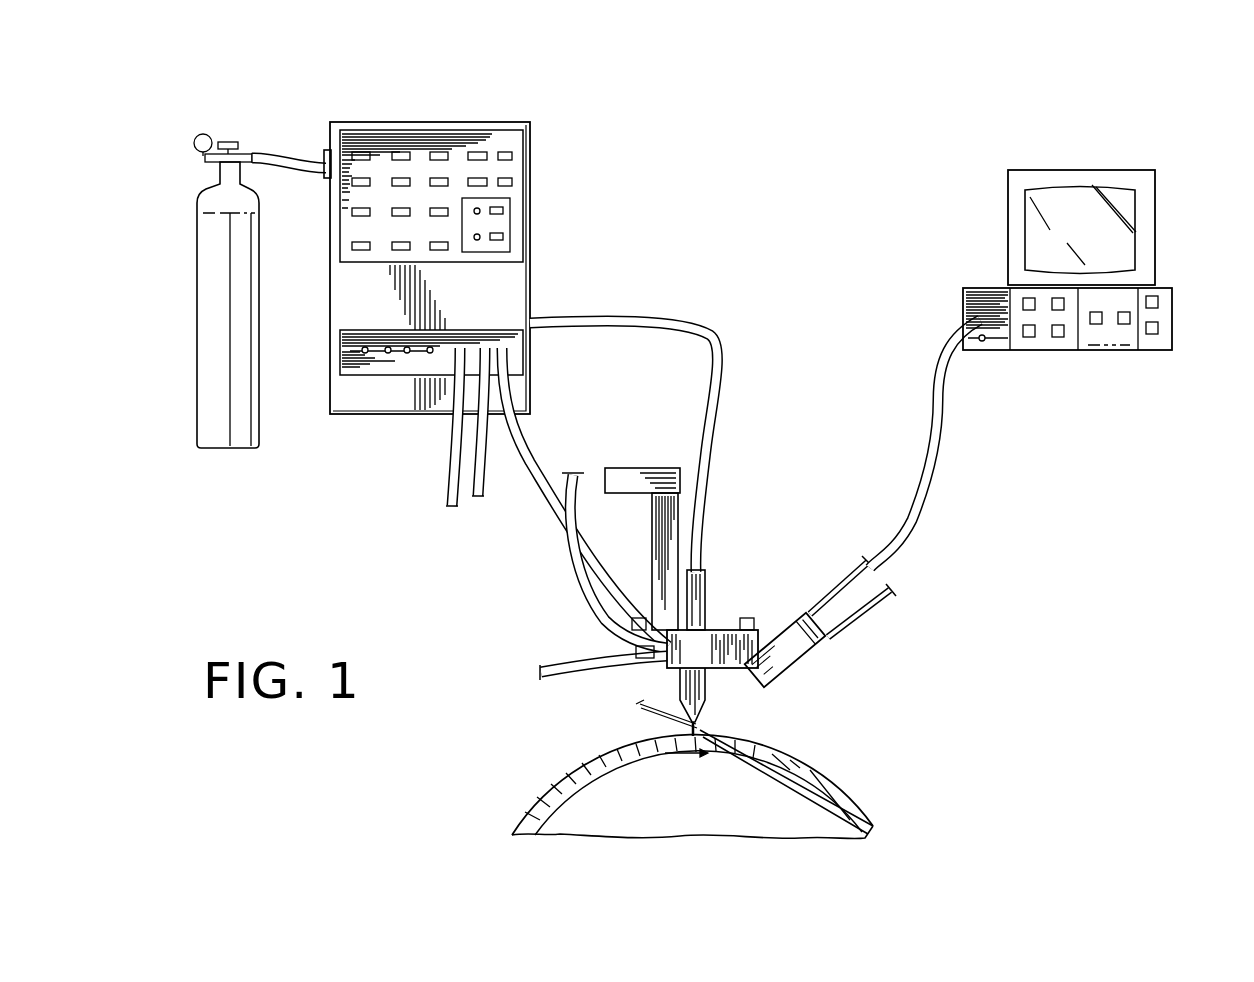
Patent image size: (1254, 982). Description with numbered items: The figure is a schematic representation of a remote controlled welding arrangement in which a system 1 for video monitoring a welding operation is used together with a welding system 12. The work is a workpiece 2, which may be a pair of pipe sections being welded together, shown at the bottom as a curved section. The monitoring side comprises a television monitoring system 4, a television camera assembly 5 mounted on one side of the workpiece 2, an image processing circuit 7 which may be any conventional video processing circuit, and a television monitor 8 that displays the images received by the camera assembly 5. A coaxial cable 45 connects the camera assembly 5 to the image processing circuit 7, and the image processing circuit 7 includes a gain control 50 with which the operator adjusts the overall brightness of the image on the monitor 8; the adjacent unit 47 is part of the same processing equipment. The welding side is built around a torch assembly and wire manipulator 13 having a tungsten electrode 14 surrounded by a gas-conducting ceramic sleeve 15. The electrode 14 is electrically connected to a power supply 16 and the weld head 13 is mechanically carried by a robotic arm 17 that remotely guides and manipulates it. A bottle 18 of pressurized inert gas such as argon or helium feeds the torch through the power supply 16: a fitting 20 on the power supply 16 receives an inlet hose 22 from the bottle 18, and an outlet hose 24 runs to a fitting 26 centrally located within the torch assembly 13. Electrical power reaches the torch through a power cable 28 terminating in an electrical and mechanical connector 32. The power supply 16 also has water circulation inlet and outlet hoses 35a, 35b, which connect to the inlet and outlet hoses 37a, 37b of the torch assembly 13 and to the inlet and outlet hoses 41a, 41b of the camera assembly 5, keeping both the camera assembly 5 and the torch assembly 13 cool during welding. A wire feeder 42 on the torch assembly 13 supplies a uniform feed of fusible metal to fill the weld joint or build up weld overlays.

The system for video monitoring a welding operation 1 is at (1126, 168).
The workpiece 2 is at (556, 782).
The television monitoring system 4 is at (1186, 256).
The television camera assembly 5 is at (826, 642).
The image processing circuit 7 is at (1176, 311).
The television monitor 8 is at (1080, 229).
The welding system 12 is at (300, 108).
The torch assembly and wire manipulator 13 is at (710, 628).
The tungsten electrode 14 is at (702, 718).
The gas-conducting ceramic sleeve 15 is at (704, 676).
The power supply 16 is at (534, 265).
The robotic arm 17 is at (622, 470).
The bottle of pressurized inert gas 18 is at (196, 328).
The fitting 20 is at (325, 157).
The inlet hose 22 is at (298, 172).
The outlet hose 24 is at (528, 455).
The fitting 26 is at (674, 668).
The power cable 28 is at (632, 325).
The electrical and mechanical connector 32 is at (704, 572).
The water circulation inlet hose 35a is at (453, 447).
The water circulation outlet hose 35b is at (476, 457).
The inlet hose 37a is at (574, 666).
The outlet hose 37b is at (592, 562).
The inlet hose 41a is at (876, 604).
The outlet hose 41b is at (846, 580).
The wire feeder 42 is at (640, 716).
The coaxial cable 45 is at (950, 440).
The video processor unit 47 is at (1066, 348).
The gain control 50 is at (1128, 344).